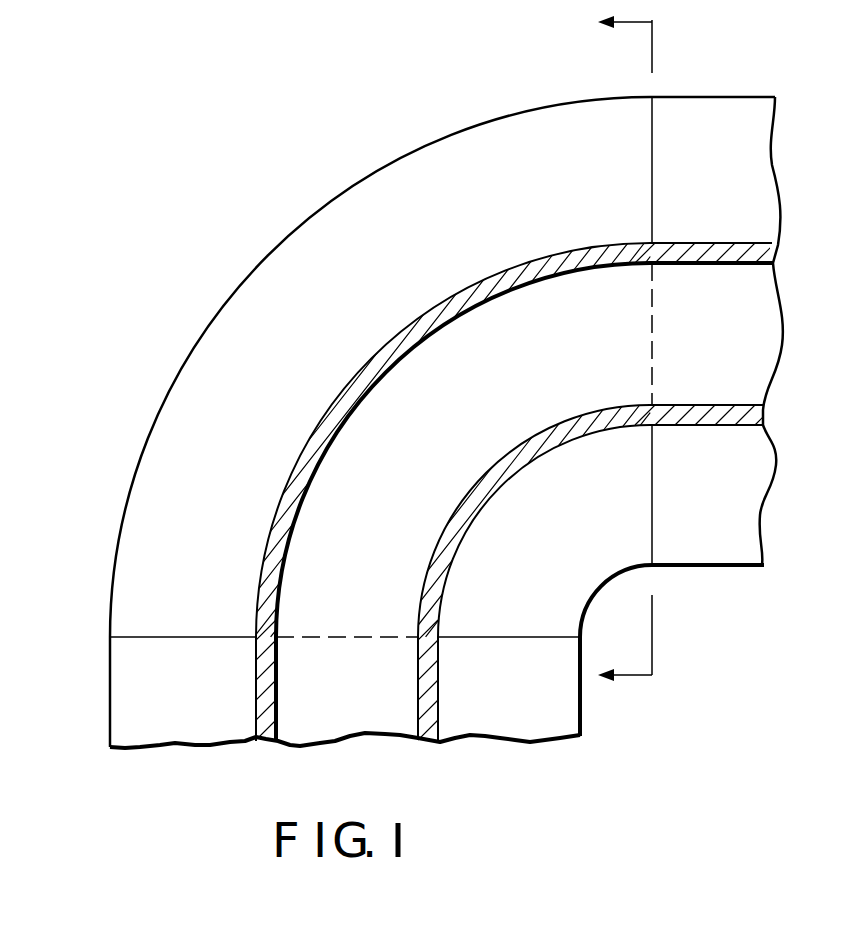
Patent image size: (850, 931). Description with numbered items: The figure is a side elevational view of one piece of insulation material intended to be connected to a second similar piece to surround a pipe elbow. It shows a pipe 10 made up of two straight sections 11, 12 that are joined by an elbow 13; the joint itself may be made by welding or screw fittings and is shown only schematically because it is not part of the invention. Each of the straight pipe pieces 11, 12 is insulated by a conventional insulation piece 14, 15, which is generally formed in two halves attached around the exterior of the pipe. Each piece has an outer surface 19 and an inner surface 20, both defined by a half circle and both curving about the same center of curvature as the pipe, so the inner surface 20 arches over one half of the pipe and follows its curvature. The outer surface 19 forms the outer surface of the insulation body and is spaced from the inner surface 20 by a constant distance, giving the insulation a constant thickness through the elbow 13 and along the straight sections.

The pipe 10 is at (736, 240).
The straight section 11 is at (725, 428).
The straight section 12 is at (444, 698).
The elbow 13 is at (495, 489).
The insulation piece 14 is at (700, 130).
The insulation piece 15 is at (162, 693).
The outer surface 19 is at (355, 185).
The inner surface 20 is at (535, 453).